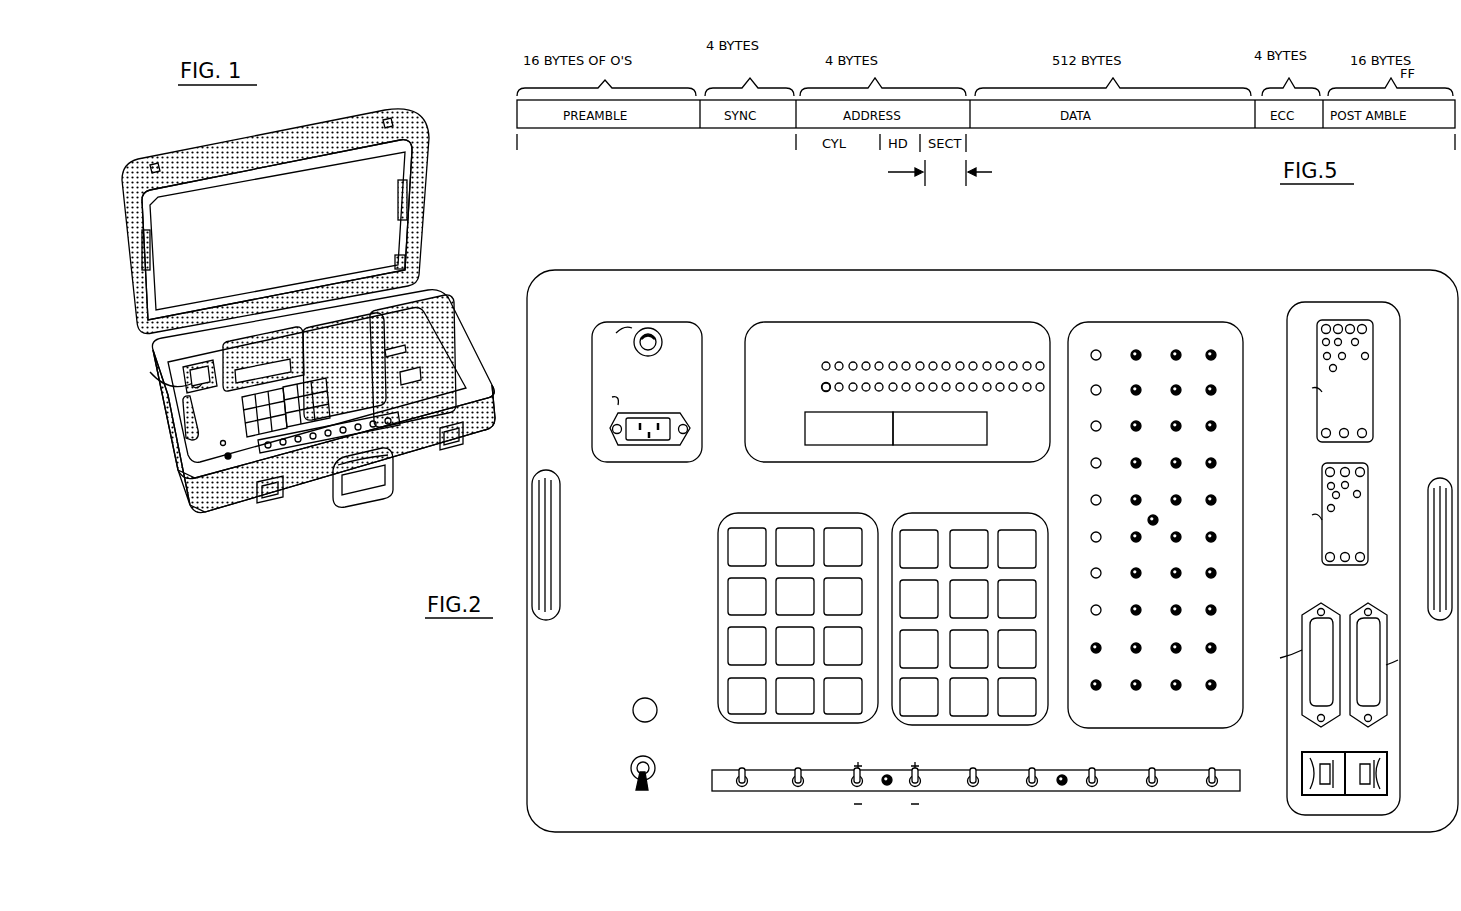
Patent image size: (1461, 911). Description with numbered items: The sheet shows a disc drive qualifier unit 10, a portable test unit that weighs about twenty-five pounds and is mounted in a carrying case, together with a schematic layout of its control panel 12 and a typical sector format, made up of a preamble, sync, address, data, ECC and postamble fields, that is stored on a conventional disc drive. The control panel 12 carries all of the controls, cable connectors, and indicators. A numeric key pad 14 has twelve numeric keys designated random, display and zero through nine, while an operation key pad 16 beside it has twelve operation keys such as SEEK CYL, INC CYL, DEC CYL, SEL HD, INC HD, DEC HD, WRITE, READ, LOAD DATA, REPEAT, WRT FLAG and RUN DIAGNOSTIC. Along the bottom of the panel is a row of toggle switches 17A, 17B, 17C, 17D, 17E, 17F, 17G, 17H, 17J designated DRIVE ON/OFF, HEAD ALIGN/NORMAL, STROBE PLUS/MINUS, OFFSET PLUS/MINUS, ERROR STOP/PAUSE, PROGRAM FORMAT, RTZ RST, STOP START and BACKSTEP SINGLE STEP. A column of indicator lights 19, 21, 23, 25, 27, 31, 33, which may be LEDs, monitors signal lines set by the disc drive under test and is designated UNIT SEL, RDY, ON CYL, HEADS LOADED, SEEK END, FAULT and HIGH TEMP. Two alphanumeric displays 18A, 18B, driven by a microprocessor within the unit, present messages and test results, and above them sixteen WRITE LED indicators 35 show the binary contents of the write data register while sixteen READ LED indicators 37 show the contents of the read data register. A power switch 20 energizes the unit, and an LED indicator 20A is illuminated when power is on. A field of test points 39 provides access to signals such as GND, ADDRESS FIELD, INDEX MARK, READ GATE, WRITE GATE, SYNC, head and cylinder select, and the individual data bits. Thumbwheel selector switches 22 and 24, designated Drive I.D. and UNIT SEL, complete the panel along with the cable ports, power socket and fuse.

In FIG. 1, the disc drive qualifier unit 10 is at (302, 172).
In FIG. 1, the control panel 12 is at (312, 452).
In FIG. 2, the control panel 12 is at (690, 808).
In FIG. 2, the numeric key pad 14 is at (950, 520).
In FIG. 2, the operation key pad 16 is at (770, 520).
In FIG. 2, the toggle switch 17A is at (736, 776).
In FIG. 2, the toggle switch 17B is at (793, 780).
In FIG. 2, the toggle switch 17C is at (853, 792).
In FIG. 2, the toggle switch 17D is at (908, 792).
In FIG. 2, the toggle switch 17E is at (973, 786).
In FIG. 2, the toggle switch 17F is at (1020, 787).
In FIG. 2, the toggle switch 17G is at (1102, 785).
In FIG. 2, the toggle switch 17H is at (1142, 785).
In FIG. 2, the toggle switch 17J is at (1205, 785).
In FIG. 2, the alphanumeric display 18A is at (853, 445).
In FIG. 2, the alphanumeric display 18B is at (920, 448).
In FIG. 2, the indicator light 19 is at (1100, 348).
In FIG. 2, the power switch 20 is at (633, 779).
In FIG. 2, the LED indicator 20A is at (645, 698).
In FIG. 2, the indicator light 21 is at (1090, 388).
In FIG. 2, the thumbwheel selector switch 22 is at (1322, 792).
In FIG. 2, the indicator light 23 is at (1090, 427).
In FIG. 2, the thumbwheel selector switch 24 is at (1358, 792).
In FIG. 2, the indicator light 25 is at (1090, 464).
In FIG. 2, the indicator light 27 is at (1092, 535).
In FIG. 2, the indicator light 31 is at (1092, 573).
In FIG. 2, the indicator light 33 is at (1088, 608).
In FIG. 2, the WRITE LED indicators 35 is at (885, 364).
In FIG. 2, the READ LED indicators 37 is at (823, 389).
In FIG. 2, the test points 39 is at (1200, 324).